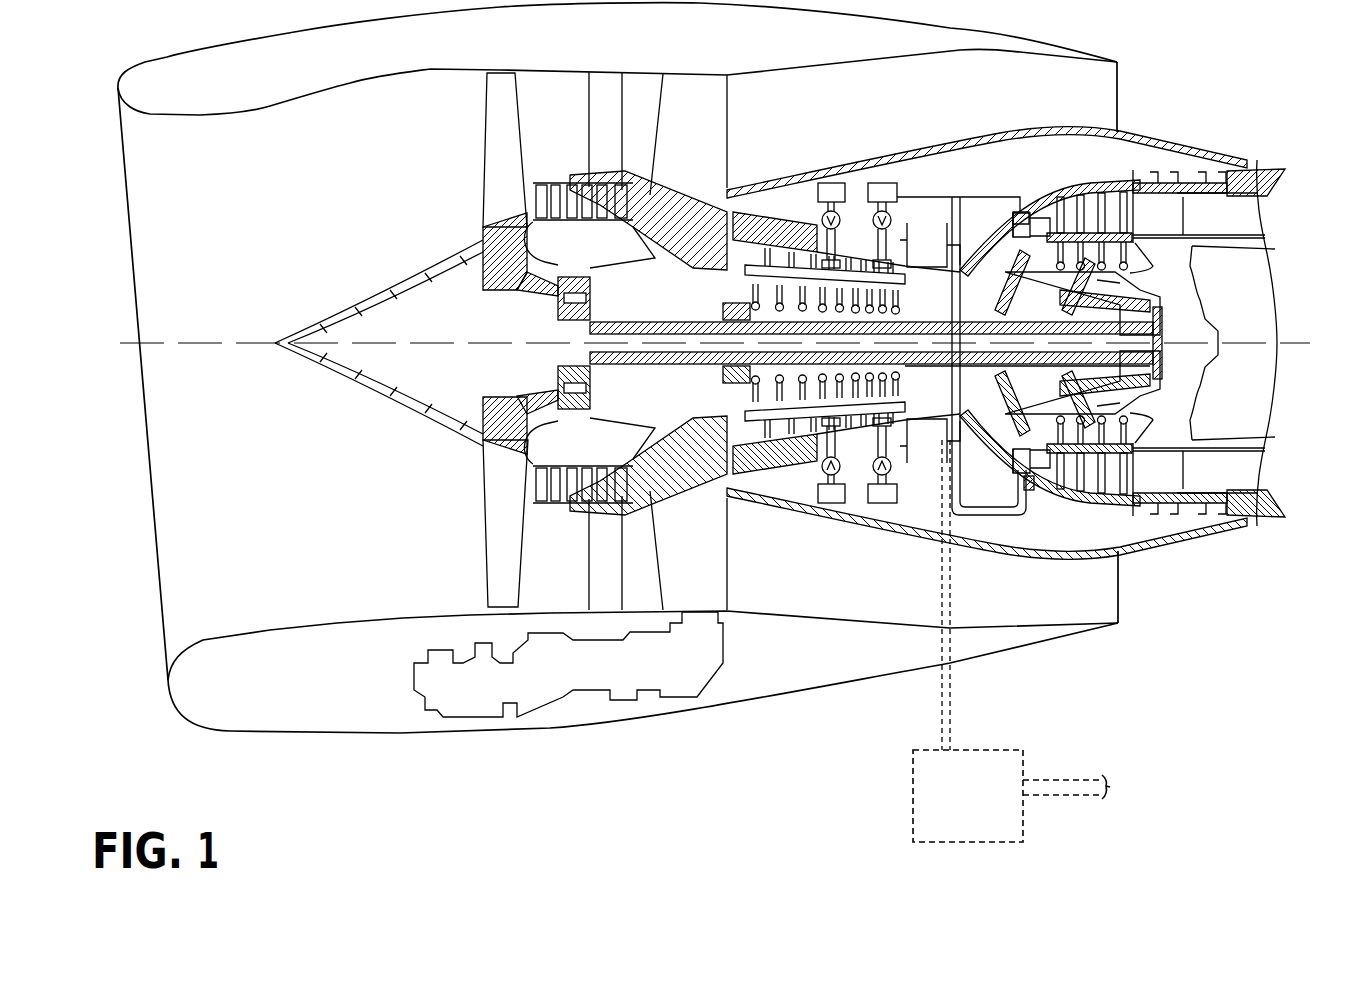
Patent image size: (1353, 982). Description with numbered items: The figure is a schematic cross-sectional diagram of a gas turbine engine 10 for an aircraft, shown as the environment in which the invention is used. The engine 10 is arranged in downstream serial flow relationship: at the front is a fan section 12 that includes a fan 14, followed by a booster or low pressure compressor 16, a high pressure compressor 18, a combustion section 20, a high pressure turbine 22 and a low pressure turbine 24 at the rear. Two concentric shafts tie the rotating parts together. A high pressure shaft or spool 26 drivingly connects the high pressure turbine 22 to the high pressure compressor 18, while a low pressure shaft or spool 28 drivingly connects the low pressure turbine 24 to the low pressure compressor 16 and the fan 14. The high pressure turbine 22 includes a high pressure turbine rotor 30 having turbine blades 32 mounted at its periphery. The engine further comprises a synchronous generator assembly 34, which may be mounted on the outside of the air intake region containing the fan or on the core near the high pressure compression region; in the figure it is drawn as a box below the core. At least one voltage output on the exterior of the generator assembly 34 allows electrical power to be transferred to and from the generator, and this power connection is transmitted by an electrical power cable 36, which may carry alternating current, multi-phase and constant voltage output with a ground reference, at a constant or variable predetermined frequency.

The gas turbine engine 10 is at (462, 490).
The fan section 12 is at (518, 57).
The fan 14 is at (495, 147).
The low pressure compressor 16 is at (565, 150).
The high pressure compressor 18 is at (800, 250).
The combustion section 20 is at (976, 445).
The high pressure turbine 22 is at (1033, 490).
The low pressure turbine 24 is at (1080, 205).
The high pressure shaft 26 is at (950, 388).
The low pressure shaft 28 is at (950, 322).
The high pressure turbine rotor 30 is at (1097, 280).
The turbine blades 32 is at (1040, 222).
The synchronous generator assembly 34 is at (978, 811).
The electrical power cable 36 is at (1043, 794).